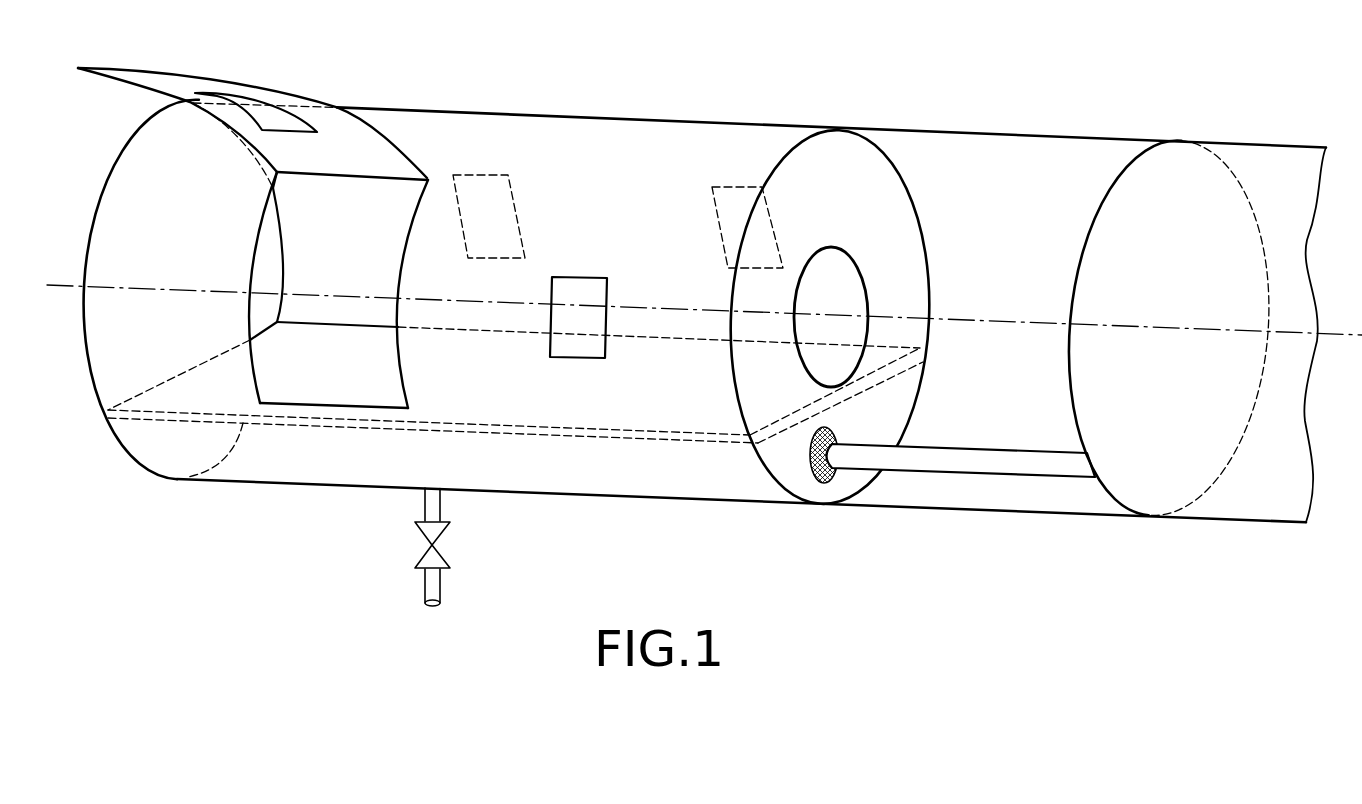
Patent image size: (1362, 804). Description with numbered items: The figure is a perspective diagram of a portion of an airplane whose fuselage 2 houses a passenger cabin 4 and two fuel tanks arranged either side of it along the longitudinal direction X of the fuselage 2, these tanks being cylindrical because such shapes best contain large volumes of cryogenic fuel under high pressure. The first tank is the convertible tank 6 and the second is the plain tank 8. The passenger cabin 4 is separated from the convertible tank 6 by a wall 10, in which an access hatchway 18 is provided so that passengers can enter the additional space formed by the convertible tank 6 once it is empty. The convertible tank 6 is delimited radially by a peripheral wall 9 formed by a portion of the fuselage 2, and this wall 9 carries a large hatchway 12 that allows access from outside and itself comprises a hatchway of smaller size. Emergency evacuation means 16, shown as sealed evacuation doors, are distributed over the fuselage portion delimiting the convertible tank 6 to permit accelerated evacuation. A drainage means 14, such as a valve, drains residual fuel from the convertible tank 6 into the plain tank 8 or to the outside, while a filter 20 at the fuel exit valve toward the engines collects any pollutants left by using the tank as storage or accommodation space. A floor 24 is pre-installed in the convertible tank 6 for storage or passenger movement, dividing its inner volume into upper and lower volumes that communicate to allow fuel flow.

The fuselage 2 is at (559, 97).
The passenger cabin 4 is at (1013, 253).
The convertible tank 6 is at (333, 277).
The plain tank 8 is at (1298, 303).
The peripheral wall 9 is at (588, 217).
The wall 10 is at (867, 168).
The hatchway 12 is at (277, 92).
The drainage means 14 is at (421, 554).
The emergency evacuation means 16 is at (482, 190).
The access hatchway 18 is at (837, 268).
The filter 20 is at (828, 484).
The floor 24 is at (188, 402).
The longitudinal direction x is at (70, 285).